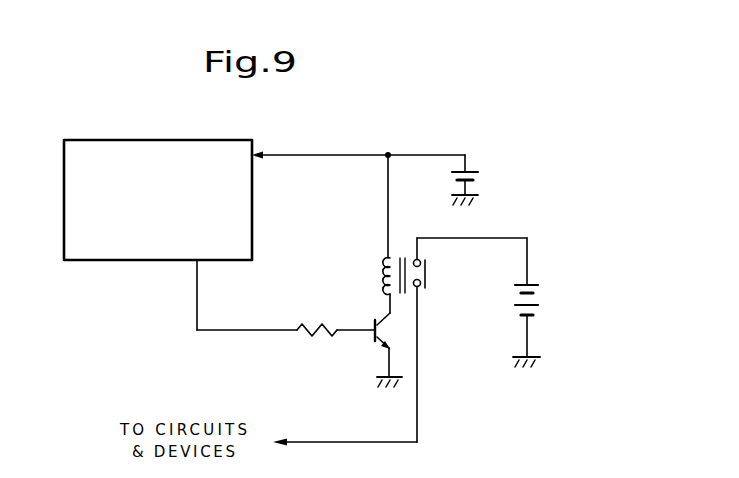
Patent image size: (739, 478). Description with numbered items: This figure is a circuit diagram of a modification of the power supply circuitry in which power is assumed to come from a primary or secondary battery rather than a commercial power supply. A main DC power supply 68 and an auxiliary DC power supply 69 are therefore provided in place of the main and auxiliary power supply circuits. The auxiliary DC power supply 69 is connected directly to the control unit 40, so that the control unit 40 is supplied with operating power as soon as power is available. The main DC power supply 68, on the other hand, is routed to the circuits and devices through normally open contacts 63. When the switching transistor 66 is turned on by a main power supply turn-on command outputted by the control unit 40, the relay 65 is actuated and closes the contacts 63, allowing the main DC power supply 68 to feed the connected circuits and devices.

The control unit 40 is at (194, 140).
The normally open contacts 63 is at (425, 273).
The relay 65 is at (383, 278).
The switching transistor 66 is at (373, 342).
The main DC power supply 68 is at (536, 298).
The auxiliary DC power supply 69 is at (473, 179).